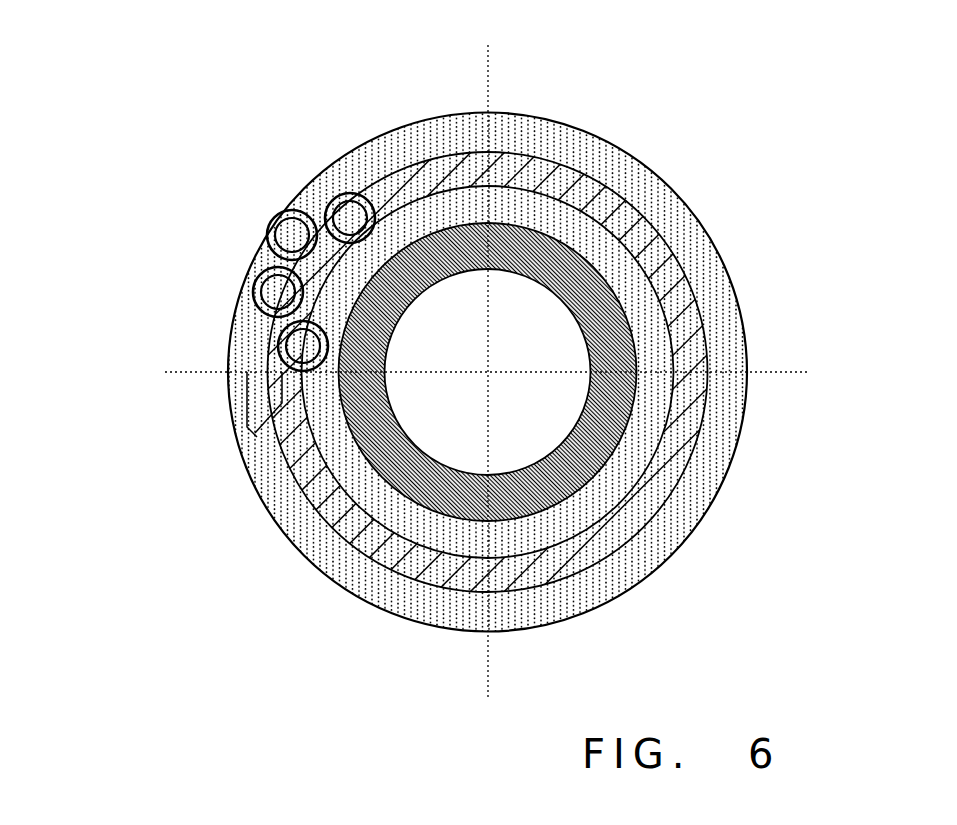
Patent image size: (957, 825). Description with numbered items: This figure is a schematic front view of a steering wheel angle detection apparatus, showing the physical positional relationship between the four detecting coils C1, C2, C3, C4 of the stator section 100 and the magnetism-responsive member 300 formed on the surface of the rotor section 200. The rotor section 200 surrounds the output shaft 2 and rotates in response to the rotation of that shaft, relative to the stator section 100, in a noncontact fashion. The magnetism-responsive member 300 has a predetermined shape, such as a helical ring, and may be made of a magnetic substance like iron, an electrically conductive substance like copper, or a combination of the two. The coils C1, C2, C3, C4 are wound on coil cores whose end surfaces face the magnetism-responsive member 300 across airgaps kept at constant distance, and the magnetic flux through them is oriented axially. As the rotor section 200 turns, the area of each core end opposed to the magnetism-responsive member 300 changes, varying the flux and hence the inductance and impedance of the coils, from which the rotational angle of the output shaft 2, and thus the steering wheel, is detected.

The stator section 100 is at (255, 237).
The rotor section 200 is at (683, 193).
The magnetism-responsive member 300 is at (683, 258).
The output shaft 2 is at (503, 378).
The coil C1 is at (254, 292).
The coil C2 is at (267, 353).
The coil C3 is at (343, 190).
The coil C4 is at (272, 226).